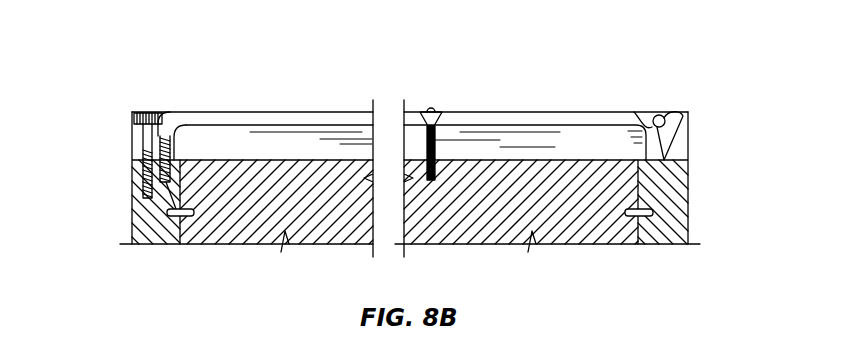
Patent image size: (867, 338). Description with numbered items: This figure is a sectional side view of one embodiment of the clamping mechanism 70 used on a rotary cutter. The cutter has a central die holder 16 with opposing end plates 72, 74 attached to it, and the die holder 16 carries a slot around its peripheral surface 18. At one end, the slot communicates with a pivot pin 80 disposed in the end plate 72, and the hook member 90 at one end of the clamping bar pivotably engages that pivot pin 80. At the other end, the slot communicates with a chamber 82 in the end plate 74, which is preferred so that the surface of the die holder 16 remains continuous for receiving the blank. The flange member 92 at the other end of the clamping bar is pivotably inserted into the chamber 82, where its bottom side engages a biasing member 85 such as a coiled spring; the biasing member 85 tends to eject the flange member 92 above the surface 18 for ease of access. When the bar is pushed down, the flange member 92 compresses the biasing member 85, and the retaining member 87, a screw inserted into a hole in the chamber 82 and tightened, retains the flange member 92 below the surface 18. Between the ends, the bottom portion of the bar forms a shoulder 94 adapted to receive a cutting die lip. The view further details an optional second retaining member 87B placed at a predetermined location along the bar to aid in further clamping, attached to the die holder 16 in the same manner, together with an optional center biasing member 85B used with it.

The clamping mechanism 70 is at (148, 83).
The peripheral surface 18 is at (162, 112).
The retaining member 87 is at (148, 112).
The shoulder 94 is at (328, 124).
The flange member 92 is at (182, 128).
The chamber 82 is at (132, 150).
The end plate 74 is at (143, 234).
The biasing member 85 is at (186, 216).
The die holder 16 is at (326, 232).
The second retaining member 87B is at (428, 112).
The center biasing member 85B is at (442, 122).
The hook member 90 is at (637, 118).
The pivot pin 80 is at (660, 115).
The end plate 72 is at (682, 240).